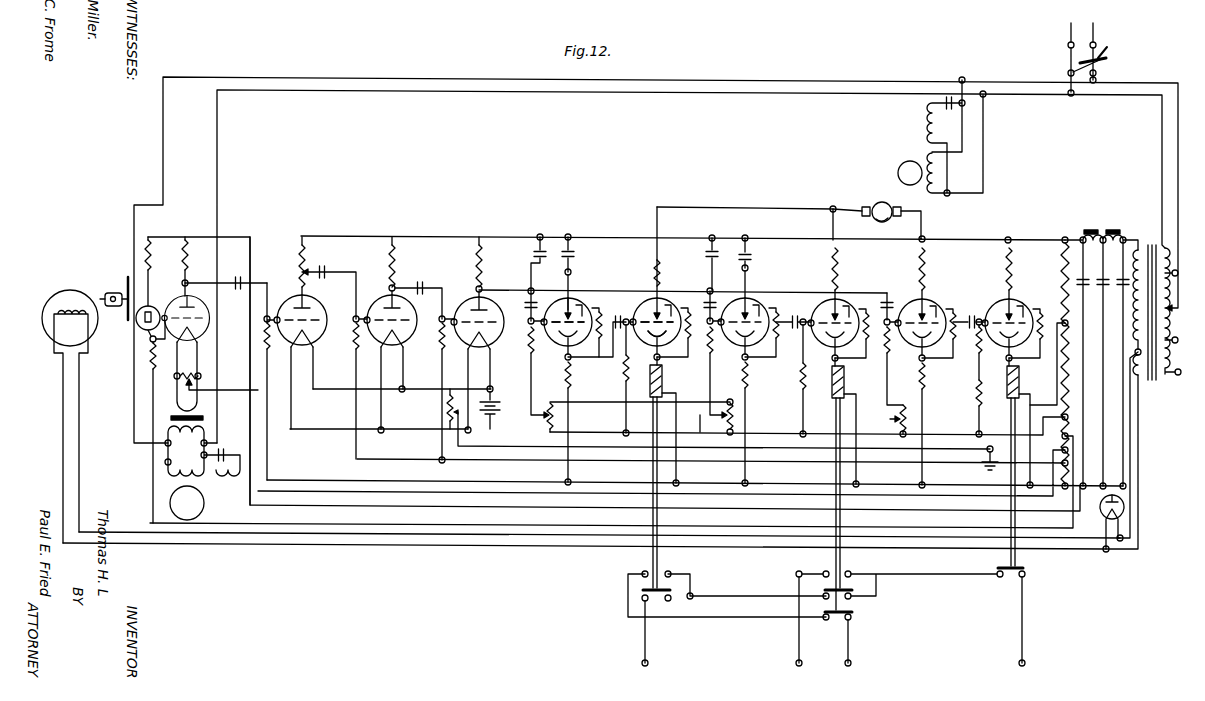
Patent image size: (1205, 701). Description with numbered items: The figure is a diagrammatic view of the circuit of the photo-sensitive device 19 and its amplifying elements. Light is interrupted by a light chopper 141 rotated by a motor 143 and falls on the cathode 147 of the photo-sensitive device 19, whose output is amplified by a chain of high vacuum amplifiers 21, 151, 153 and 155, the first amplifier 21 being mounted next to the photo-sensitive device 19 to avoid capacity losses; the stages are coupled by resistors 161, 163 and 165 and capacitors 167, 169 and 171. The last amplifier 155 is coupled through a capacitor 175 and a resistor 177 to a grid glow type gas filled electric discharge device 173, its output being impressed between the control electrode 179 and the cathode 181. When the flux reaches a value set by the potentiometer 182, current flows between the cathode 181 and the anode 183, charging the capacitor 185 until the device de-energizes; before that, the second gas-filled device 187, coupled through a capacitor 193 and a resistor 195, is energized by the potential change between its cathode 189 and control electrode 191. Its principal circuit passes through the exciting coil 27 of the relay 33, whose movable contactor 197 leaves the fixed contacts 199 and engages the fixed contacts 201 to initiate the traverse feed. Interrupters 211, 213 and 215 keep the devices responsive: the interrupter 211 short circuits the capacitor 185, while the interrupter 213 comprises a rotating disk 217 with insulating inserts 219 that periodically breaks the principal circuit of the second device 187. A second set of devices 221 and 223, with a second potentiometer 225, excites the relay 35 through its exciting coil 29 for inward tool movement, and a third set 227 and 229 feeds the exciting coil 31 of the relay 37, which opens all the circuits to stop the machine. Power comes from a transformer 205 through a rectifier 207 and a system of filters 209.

The light chopper 141 is at (128, 286).
The motor 143 is at (110, 292).
The photo-sensitive device 19 is at (150, 306).
The high vacuum amplifier 21 is at (190, 296).
The cathode 147 is at (144, 329).
The resistor 161 is at (252, 334).
The capacitor 167 is at (243, 280).
The capacitor 169 is at (326, 270).
The high vacuum amplifier 151 is at (321, 309).
The high vacuum amplifier 153 is at (380, 297).
The capacitor 171 is at (424, 282).
The high vacuum amplifier 155 is at (472, 300).
The resistor 163 is at (354, 348).
The resistor 165 is at (440, 350).
The interrupter 211 is at (534, 257).
The capacitor 175 is at (529, 298).
The resistor 177 is at (529, 354).
The control electrode 179 is at (556, 300).
The cathode 181 is at (563, 348).
The anode 183 is at (570, 303).
The capacitor 185 is at (572, 250).
The gas filled electric discharge device 173 is at (578, 300).
The control electrode 191 is at (645, 306).
The capacitor 193 is at (619, 318).
The gas-filled electric discharge device 187 is at (667, 300).
The cathode 189 is at (668, 345).
The resistor 195 is at (624, 369).
The exciting coil 27 is at (663, 380).
The interrupter 215 is at (708, 252).
The electric-discharge device 221 is at (762, 300).
The electric-discharge device 223 is at (845, 300).
The exciting coil 29 is at (844, 376).
The rotating disk 217 is at (883, 223).
The insulating inserts 219 is at (889, 208).
The interrupter 213 is at (878, 189).
The electric-discharge device 227 is at (934, 306).
The electric-discharge device 229 is at (1018, 307).
The exciting coil 31 is at (1019, 376).
The relay 33 is at (702, 425).
The relay 35 is at (861, 428).
The relay 37 is at (989, 428).
The potentiometer 182 is at (547, 426).
The potentiometer 225 is at (735, 418).
The filters 209 is at (1107, 315).
The transformer 205 is at (1150, 401).
The rectifier 207 is at (1124, 506).
The fixed contacts 201 is at (670, 574).
The movable contactor 197 is at (675, 588).
The fixed contacts 199 is at (655, 600).